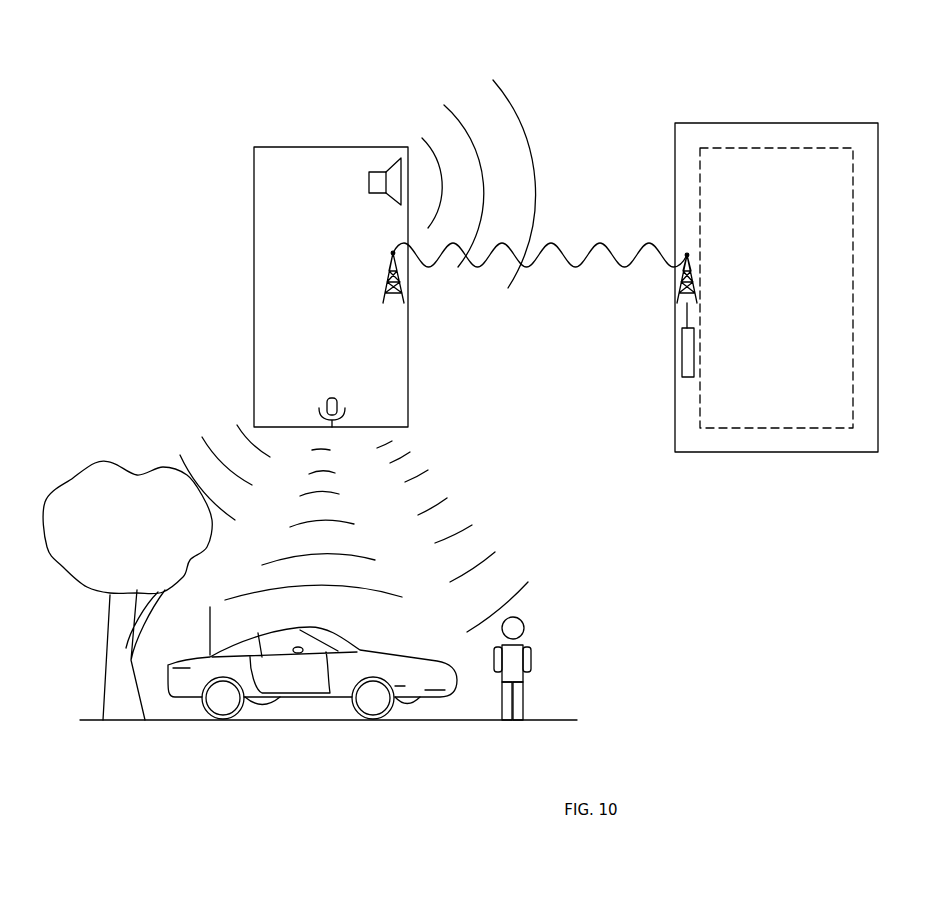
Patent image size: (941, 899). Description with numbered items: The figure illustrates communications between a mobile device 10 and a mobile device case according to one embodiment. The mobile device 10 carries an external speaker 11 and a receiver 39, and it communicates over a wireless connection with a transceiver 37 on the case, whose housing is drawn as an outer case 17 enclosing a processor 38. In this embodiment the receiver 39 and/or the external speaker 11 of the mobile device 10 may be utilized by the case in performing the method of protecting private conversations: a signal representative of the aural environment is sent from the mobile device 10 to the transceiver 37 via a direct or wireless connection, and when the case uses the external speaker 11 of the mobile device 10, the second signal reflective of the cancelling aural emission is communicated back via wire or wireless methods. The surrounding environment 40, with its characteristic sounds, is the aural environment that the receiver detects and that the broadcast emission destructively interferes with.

The mobile device 10 is at (254, 228).
The external speaker 11 is at (369, 183).
The transceiver 37 is at (750, 272).
The receiver 39 is at (330, 396).
The Outer Case 17 is at (878, 123).
The Processor 38 is at (683, 378).
The Environment 40 is at (577, 603).